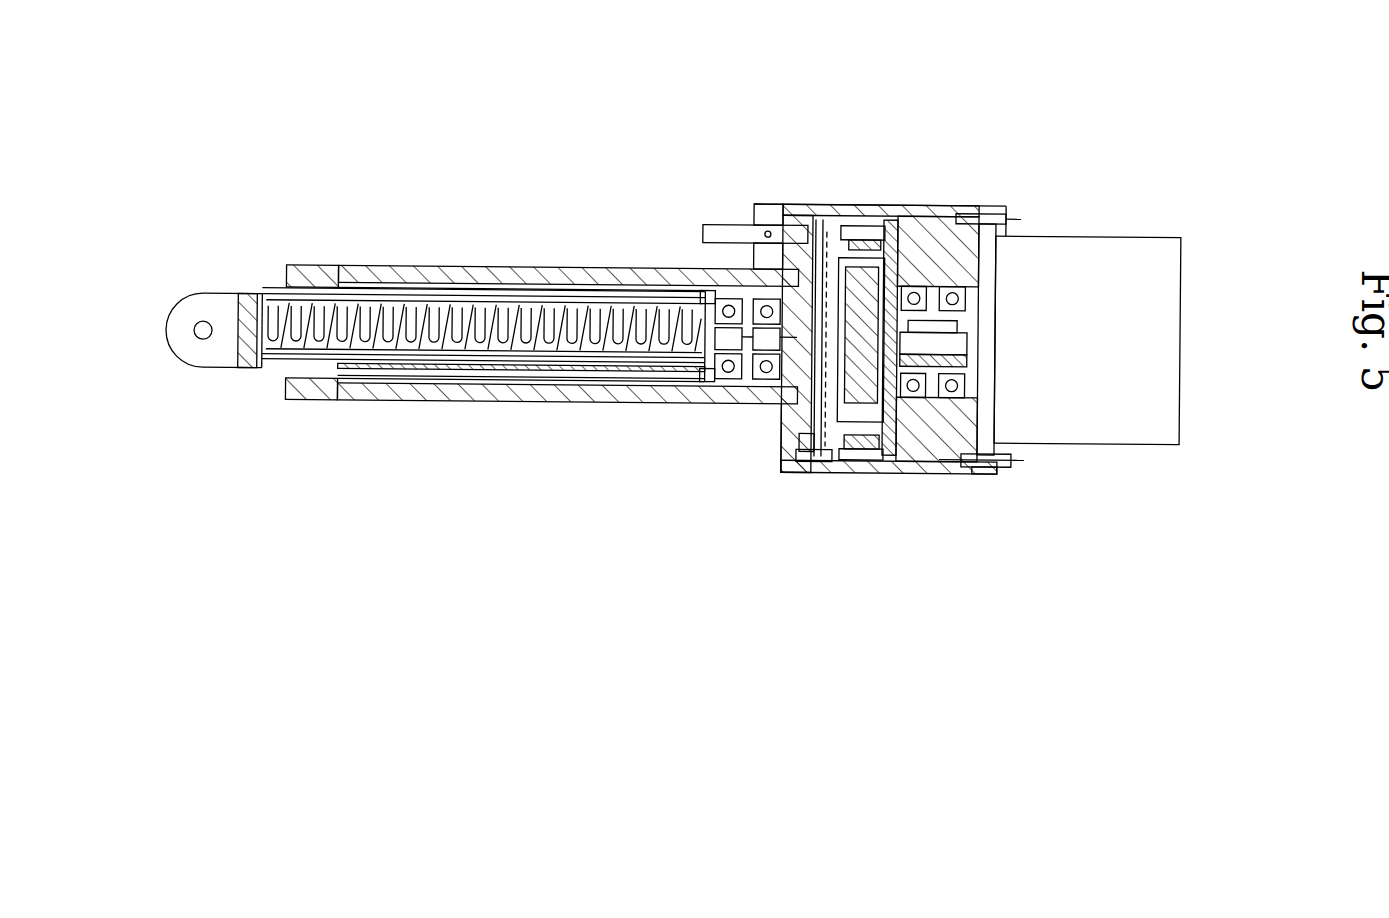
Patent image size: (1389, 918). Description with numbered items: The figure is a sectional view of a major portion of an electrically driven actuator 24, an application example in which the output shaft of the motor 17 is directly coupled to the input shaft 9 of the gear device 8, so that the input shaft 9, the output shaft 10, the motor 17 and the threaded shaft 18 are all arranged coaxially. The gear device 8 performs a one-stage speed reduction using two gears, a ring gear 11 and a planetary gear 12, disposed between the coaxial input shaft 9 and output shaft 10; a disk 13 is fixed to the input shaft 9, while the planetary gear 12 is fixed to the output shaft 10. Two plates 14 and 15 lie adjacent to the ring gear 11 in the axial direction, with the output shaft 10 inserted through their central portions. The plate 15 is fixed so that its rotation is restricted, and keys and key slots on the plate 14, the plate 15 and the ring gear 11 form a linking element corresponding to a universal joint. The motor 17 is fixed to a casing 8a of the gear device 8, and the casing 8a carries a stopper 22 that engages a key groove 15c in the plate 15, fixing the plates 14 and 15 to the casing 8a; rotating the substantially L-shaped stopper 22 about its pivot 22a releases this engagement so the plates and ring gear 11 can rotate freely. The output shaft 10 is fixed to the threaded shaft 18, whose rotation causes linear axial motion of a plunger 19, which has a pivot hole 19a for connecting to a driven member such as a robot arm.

The electrically driven actuator 24 is at (655, 53).
The stopper 22 is at (723, 218).
The pivot 22a is at (767, 222).
The key groove 15c is at (828, 207).
The casing 8a is at (930, 210).
The motor 17 is at (1140, 255).
The pivot hole 19a is at (205, 332).
The plunger 19 is at (225, 358).
The threaded shaft 18 is at (537, 350).
The output shaft 10 is at (773, 336).
The plate 15 is at (785, 438).
The plate 14 is at (822, 445).
The ring gear 11 is at (853, 456).
The disk 13 is at (893, 452).
The gear device 8 is at (932, 452).
The planetary gear 12 is at (915, 413).
The input shaft 9 is at (968, 372).